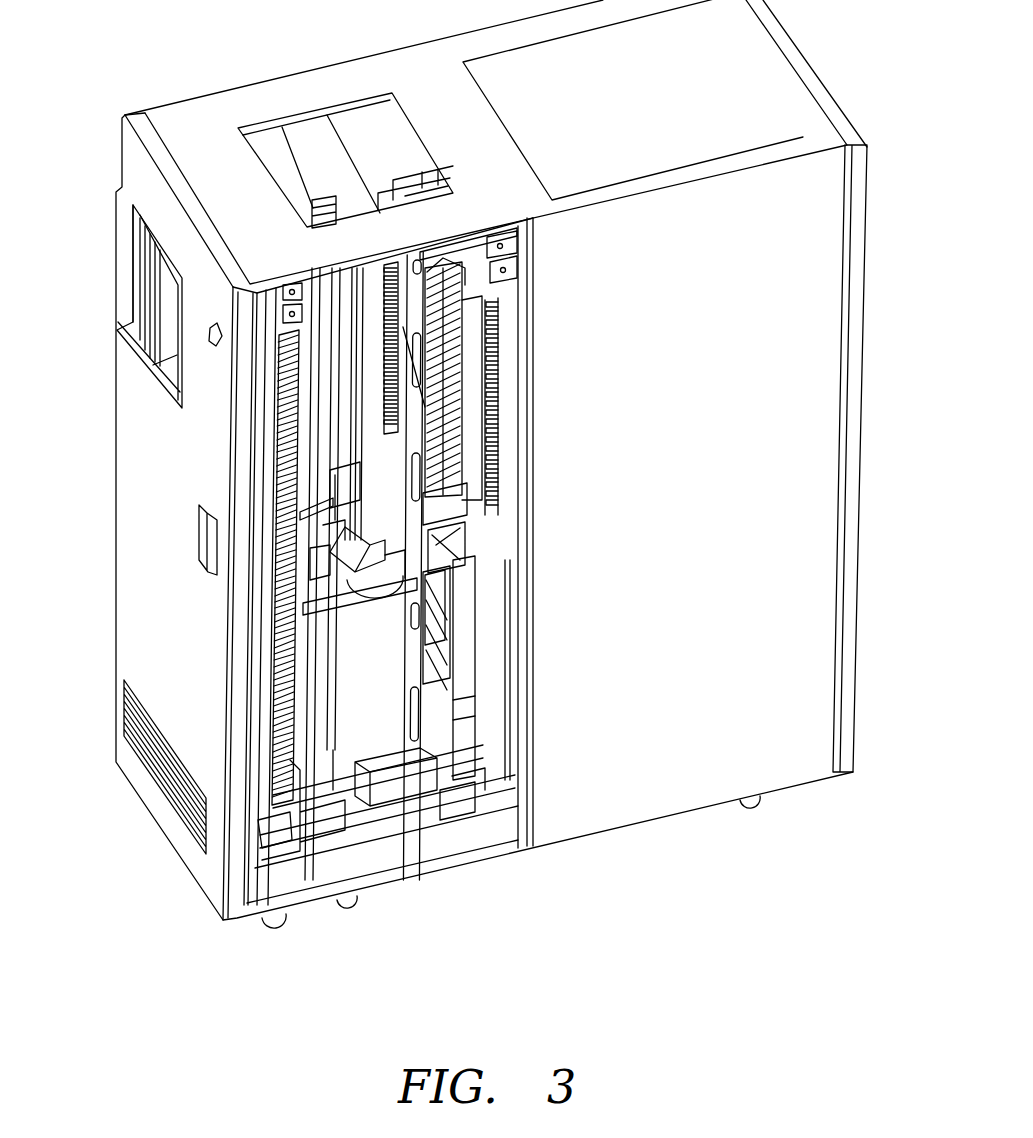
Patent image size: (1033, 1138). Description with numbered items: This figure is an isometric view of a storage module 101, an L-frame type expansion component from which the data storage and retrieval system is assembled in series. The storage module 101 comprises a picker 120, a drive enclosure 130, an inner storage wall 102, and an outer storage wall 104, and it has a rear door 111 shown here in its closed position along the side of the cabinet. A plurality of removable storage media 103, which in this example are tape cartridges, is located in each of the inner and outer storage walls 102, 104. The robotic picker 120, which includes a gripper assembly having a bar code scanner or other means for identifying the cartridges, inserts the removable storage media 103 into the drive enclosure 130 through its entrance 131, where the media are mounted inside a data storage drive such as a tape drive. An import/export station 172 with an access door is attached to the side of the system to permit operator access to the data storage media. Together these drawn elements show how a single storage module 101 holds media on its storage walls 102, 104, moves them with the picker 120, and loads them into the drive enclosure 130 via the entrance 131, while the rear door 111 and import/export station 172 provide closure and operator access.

The storage module 101 is at (230, 122).
The inner storage wall 102 is at (466, 376).
The removable storage media 103 is at (446, 436).
The outer storage wall 104 is at (284, 778).
The rear door 111 is at (860, 192).
The picker 120 is at (367, 604).
The drive enclosure 130 is at (462, 661).
The entrance 131 is at (430, 642).
The import/export station 172 is at (168, 288).